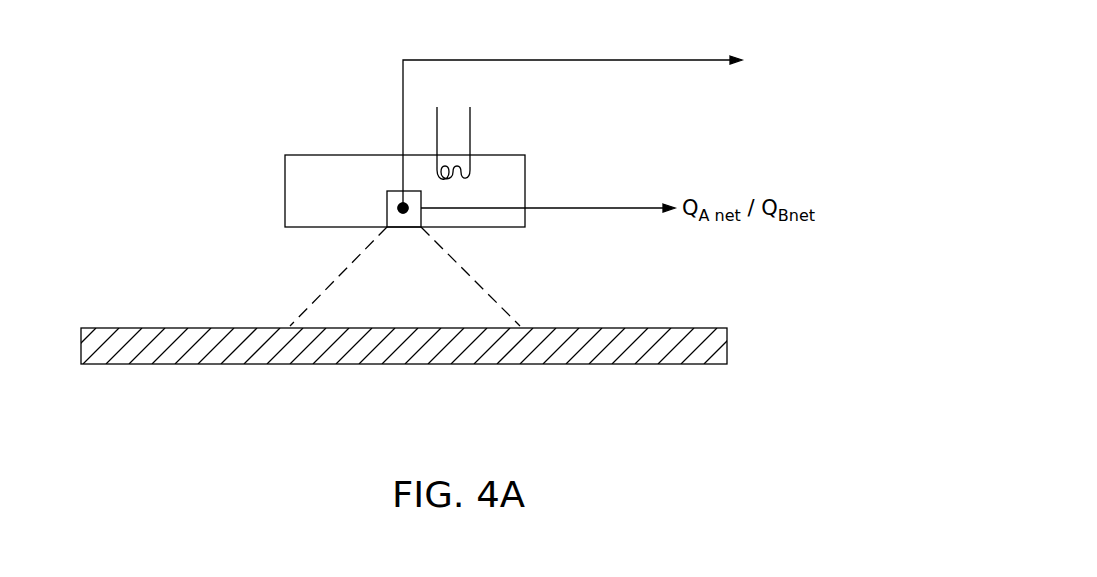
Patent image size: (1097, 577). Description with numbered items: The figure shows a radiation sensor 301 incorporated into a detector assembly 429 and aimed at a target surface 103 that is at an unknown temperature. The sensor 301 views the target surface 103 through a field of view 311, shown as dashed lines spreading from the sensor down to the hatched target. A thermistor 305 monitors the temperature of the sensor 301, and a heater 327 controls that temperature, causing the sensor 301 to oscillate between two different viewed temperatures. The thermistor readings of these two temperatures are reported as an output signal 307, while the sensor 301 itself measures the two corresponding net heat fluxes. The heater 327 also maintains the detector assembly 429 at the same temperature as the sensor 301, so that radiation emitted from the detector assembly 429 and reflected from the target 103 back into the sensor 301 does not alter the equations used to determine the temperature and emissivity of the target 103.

The target surface 103 is at (631, 318).
The radiation sensor 301 is at (386, 214).
The thermistor 305 is at (397, 205).
The output signal 307 is at (611, 60).
The field of view 311 is at (343, 272).
The heater 327 is at (470, 120).
The detector assembly 429 is at (525, 168).